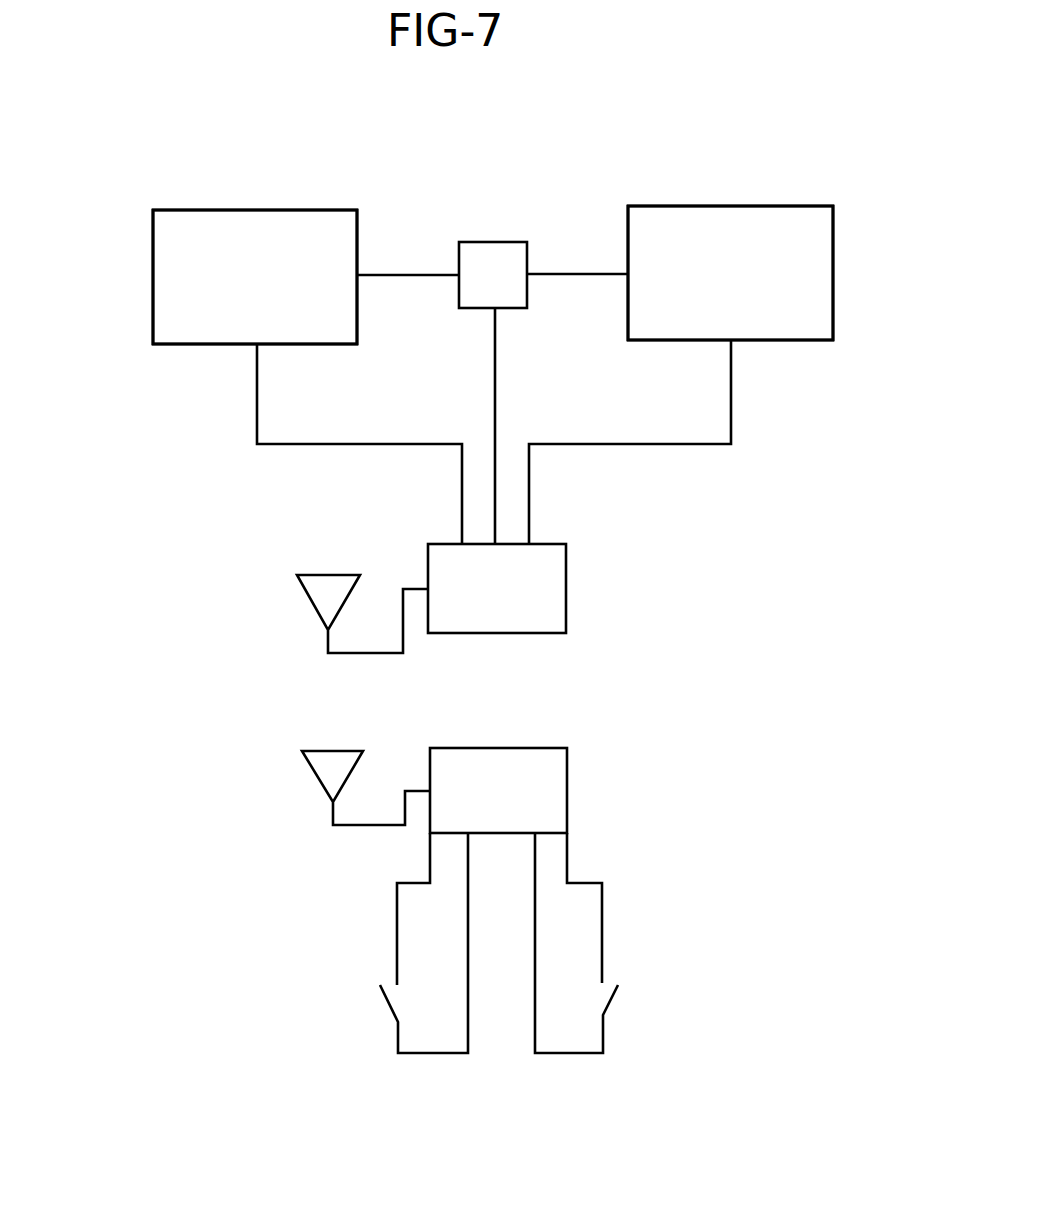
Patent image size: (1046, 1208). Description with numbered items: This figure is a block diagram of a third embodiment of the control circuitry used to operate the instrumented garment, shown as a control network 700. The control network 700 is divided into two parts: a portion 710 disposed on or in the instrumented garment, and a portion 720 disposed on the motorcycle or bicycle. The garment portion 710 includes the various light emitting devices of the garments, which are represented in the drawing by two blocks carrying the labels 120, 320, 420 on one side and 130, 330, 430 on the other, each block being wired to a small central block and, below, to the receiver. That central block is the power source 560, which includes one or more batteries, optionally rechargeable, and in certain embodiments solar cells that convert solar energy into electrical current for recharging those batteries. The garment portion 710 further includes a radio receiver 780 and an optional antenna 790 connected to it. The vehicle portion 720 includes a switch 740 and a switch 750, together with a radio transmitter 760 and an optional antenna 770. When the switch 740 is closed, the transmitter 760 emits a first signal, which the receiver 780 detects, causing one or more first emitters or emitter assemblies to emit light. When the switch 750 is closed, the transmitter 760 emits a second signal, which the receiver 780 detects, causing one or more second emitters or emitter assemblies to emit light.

The control network 700 is at (160, 975).
The portion 710 is at (843, 124).
The portion 720 is at (812, 678).
The first circuit block 120 is at (255, 241).
The first circuit block 320 is at (266, 281).
The first circuit block 420 is at (270, 317).
The second circuit block 130 is at (752, 248).
The second circuit block 330 is at (760, 287).
The second circuit block 430 is at (770, 323).
The power source 560 is at (487, 258).
The radio receiver 780 is at (562, 587).
The antenna 790 is at (307, 598).
The radio transmitter 760 is at (565, 783).
The antenna 770 is at (325, 766).
The switch 740 is at (382, 995).
The switch 750 is at (607, 1002).